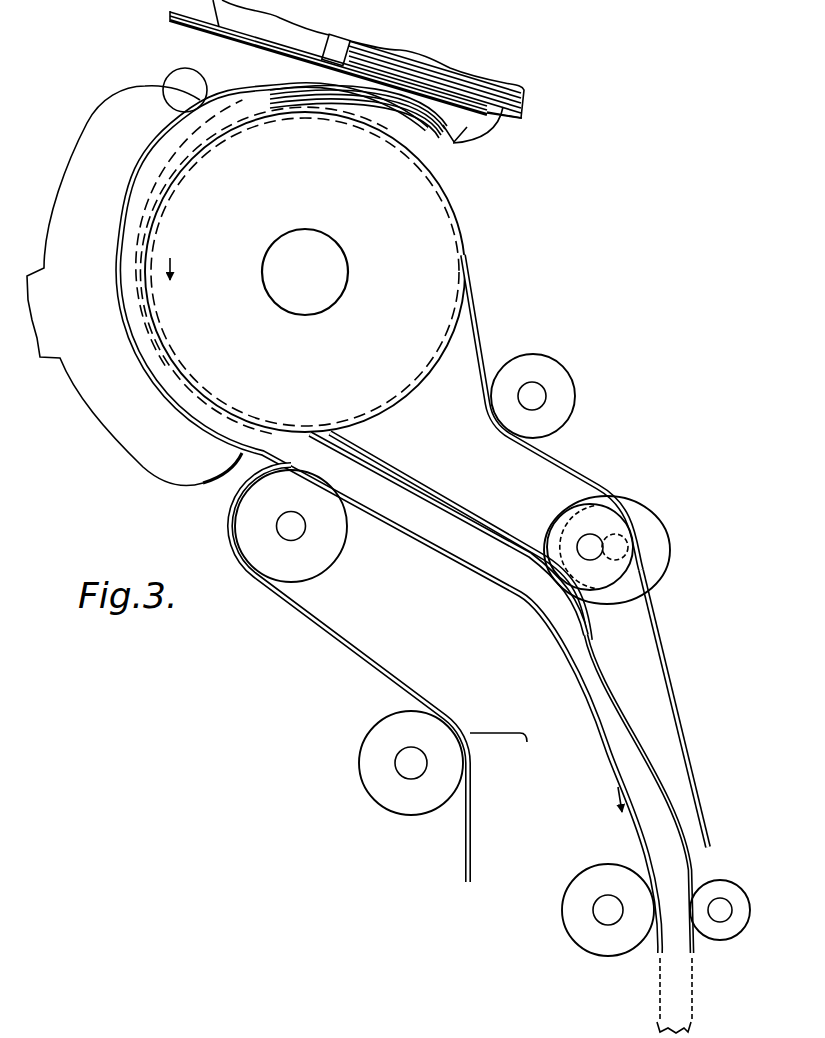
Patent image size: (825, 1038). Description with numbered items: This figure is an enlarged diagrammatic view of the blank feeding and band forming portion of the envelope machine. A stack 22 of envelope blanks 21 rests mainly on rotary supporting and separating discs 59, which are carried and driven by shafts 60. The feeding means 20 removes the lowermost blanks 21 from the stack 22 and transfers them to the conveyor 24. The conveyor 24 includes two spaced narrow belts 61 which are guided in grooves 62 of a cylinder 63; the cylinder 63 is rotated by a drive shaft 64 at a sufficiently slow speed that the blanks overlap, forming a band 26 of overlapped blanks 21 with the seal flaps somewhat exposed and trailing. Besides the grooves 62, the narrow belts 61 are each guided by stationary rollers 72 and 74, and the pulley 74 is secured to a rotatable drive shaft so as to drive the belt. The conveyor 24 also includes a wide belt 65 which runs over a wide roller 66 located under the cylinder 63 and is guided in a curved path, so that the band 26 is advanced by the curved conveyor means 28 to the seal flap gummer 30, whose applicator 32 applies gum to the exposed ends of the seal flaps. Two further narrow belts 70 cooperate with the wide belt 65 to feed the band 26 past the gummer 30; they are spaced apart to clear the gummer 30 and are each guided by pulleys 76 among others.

The feeding means 20 is at (149, 84).
The envelope blanks 21 is at (473, 135).
The stack 22 is at (484, 77).
The conveyor 24 is at (460, 503).
The band 26 is at (223, 423).
The curved conveyor means 28 is at (635, 737).
The seal flap gummer 30 is at (725, 955).
The applicator 32 is at (728, 888).
The rotary supporting and separating discs 59 is at (243, 43).
The shafts 60 is at (338, 43).
The narrow belts 61 is at (478, 322).
The grooves 62 is at (428, 363).
The cylinder 63 is at (440, 258).
The drive shaft 64 is at (337, 262).
The wide belt 65 is at (578, 686).
The wide roller 66 is at (332, 548).
The narrow belts 70 is at (658, 660).
The stationary rollers 72 is at (562, 397).
The stationary rollers 74 is at (640, 513).
The pulleys 76 is at (562, 522).